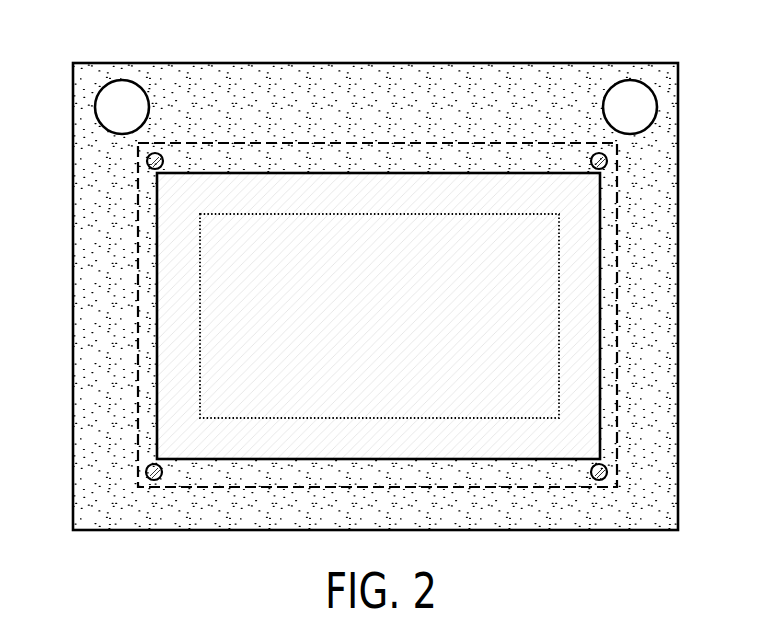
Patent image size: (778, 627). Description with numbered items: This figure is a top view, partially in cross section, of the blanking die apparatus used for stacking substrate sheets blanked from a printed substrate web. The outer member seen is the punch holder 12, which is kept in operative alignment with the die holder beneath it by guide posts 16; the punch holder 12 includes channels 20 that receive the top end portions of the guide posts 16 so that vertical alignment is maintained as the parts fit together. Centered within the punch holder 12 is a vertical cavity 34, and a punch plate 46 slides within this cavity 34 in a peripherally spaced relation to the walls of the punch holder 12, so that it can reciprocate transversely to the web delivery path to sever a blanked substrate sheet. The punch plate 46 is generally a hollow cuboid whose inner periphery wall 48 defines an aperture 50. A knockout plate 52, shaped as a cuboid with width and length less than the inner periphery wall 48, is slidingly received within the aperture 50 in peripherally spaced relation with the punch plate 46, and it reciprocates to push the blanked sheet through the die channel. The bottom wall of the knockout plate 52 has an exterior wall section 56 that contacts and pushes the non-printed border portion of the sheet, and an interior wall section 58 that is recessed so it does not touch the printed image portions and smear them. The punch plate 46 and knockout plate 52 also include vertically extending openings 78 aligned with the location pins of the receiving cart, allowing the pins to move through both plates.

The punch holder 12 is at (678, 313).
The guide posts 16 is at (120, 80).
The channels 20 is at (384, 75).
The vertical cavity 34 is at (379, 315).
The punch plate 46 is at (435, 315).
The inner periphery wall 48 is at (379, 237).
The aperture 50 is at (379, 316).
The knockout plate 52 is at (605, 412).
The exterior wall section 56 is at (180, 308).
The interior wall section 58 is at (218, 355).
The vertically extending openings 78 is at (162, 153).